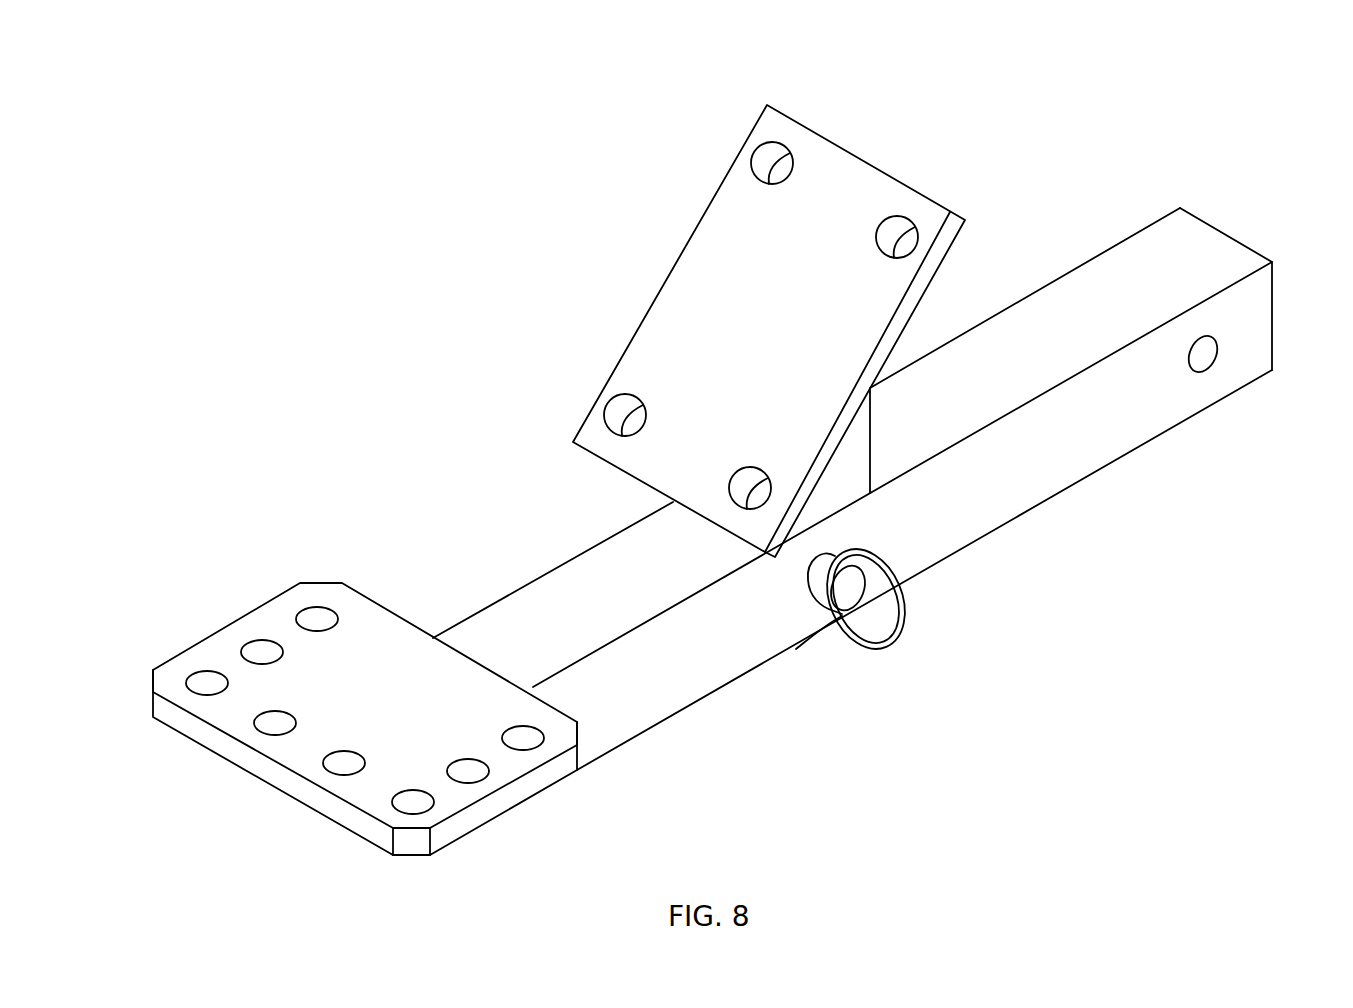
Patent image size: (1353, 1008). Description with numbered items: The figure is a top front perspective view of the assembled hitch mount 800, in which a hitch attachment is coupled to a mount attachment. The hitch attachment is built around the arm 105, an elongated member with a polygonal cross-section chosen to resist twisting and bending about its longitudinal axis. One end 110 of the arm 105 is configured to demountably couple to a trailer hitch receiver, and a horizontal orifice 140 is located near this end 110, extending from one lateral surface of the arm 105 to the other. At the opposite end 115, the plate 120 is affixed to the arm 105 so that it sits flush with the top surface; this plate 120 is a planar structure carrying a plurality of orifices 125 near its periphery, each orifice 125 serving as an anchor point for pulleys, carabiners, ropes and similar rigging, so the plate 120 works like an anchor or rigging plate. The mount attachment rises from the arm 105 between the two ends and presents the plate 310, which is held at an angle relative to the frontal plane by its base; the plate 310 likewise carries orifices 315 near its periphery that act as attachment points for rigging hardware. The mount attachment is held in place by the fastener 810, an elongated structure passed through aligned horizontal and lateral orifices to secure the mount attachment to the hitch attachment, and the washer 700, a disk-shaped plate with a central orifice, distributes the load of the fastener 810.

The hitch mount 800 is at (1200, 125).
The arm 105 is at (1108, 254).
The end 110 is at (1262, 257).
The end 115 is at (518, 806).
The plate 120 is at (390, 648).
The orifice 125 is at (207, 683).
The horizontal orifice 140 is at (1206, 366).
The plate 310 is at (767, 104).
The orifice 315 is at (895, 228).
The washer 700 is at (812, 648).
The fastener 810 is at (893, 645).